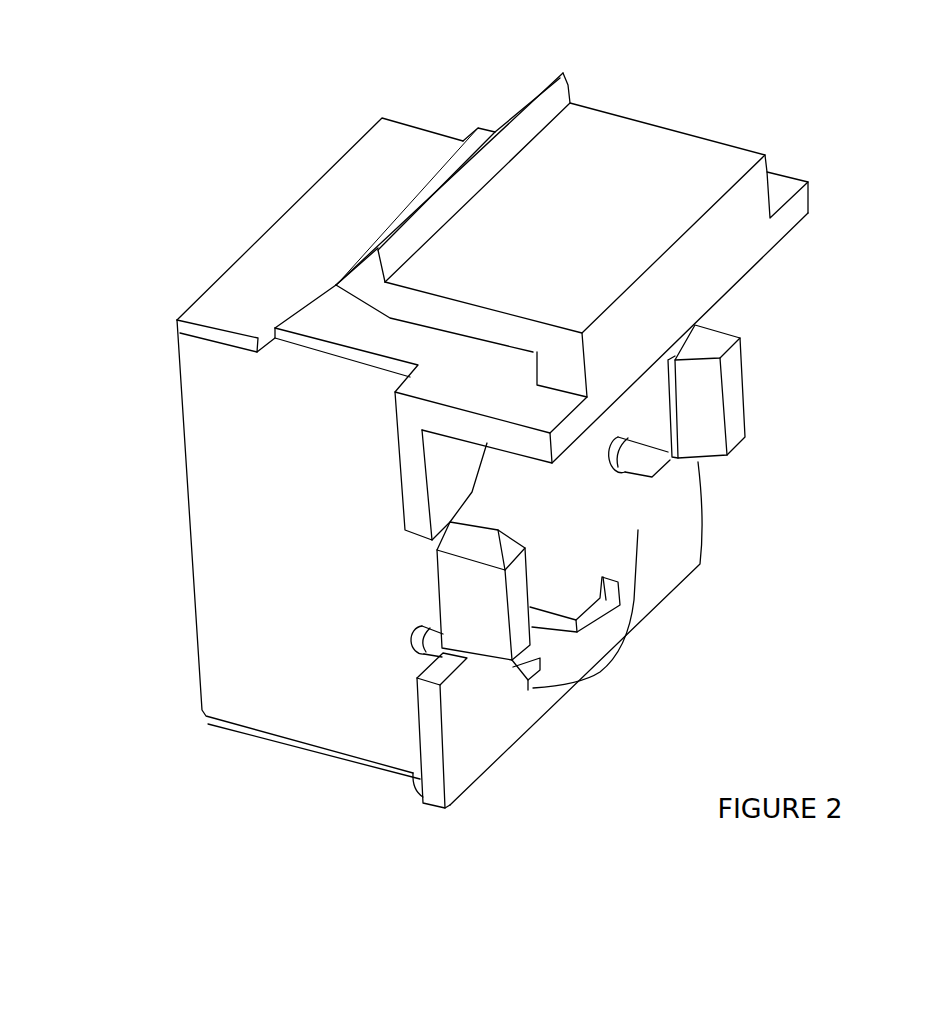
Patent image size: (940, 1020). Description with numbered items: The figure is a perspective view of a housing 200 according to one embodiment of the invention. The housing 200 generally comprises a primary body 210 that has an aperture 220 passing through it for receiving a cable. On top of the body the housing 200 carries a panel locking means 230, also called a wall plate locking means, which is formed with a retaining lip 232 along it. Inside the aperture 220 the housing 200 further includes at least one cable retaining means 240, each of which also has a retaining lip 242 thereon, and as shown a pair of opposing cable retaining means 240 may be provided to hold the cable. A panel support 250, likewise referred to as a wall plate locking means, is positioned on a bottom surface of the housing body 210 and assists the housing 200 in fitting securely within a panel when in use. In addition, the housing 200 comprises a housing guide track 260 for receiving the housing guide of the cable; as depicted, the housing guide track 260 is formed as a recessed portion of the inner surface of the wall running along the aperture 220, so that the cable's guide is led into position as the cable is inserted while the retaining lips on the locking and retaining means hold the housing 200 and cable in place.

The housing 200 is at (868, 74).
The primary body 210 is at (228, 678).
The aperture 220 is at (597, 522).
The panel locking means 230 is at (533, 232).
The retaining lip 232 is at (515, 125).
The cable retaining means 240 is at (450, 626).
The retaining lip 242 is at (500, 528).
The panel support 250 is at (415, 772).
The housing guide track 260 is at (550, 640).